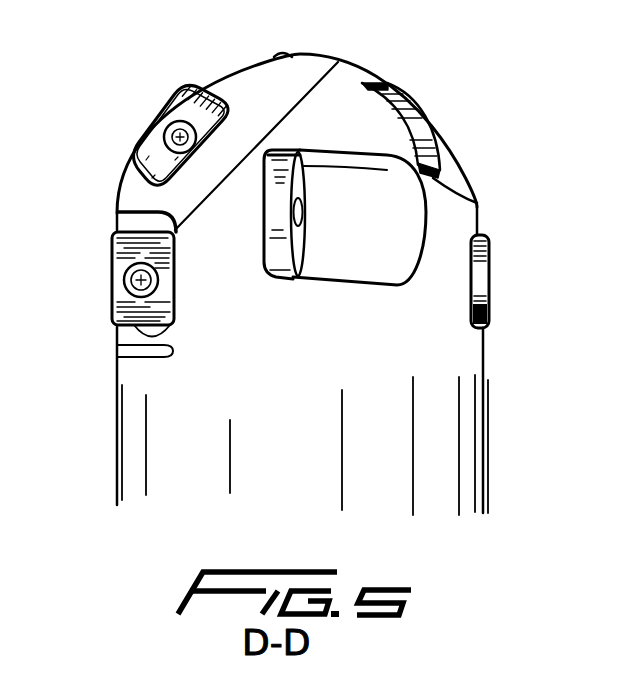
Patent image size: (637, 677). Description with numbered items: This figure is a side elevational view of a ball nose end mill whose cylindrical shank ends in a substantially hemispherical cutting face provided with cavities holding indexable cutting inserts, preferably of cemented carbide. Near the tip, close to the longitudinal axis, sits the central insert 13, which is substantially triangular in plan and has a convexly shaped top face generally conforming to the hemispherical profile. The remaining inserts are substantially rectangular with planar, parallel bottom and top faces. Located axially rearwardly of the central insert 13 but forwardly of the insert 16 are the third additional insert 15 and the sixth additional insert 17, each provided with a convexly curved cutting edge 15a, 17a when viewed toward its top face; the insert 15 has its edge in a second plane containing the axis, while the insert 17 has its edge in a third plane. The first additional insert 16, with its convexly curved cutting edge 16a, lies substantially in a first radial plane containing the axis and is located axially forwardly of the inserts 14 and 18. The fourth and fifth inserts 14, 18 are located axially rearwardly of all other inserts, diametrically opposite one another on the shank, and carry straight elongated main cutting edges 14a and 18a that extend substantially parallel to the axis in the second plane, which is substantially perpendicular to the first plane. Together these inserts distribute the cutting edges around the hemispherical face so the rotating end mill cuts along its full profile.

The central insert 13 is at (285, 56).
The fourth additional insert 14 is at (113, 294).
The main cutting edge 14a is at (111, 259).
The third additional insert 15 is at (143, 136).
The cutting edge 15a is at (173, 96).
The first additional insert 16 is at (281, 240).
The cutting edge 16a is at (302, 183).
The sixth additional insert 17 is at (408, 112).
The cutting edge 17a is at (437, 153).
The fifth additional insert 18 is at (490, 285).
The main cutting edge 18a is at (490, 258).